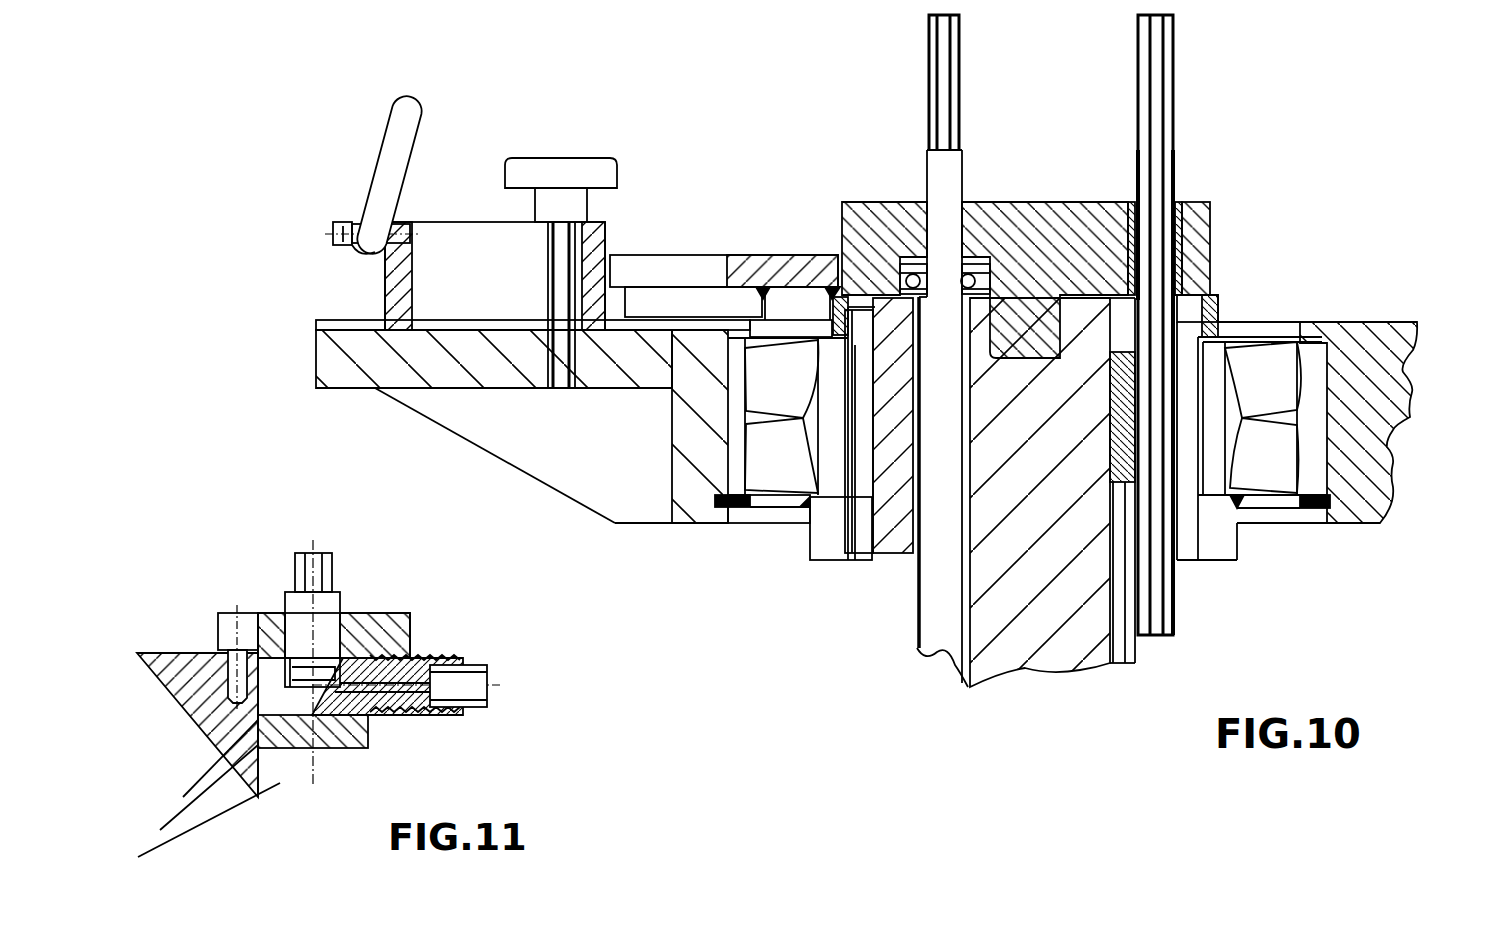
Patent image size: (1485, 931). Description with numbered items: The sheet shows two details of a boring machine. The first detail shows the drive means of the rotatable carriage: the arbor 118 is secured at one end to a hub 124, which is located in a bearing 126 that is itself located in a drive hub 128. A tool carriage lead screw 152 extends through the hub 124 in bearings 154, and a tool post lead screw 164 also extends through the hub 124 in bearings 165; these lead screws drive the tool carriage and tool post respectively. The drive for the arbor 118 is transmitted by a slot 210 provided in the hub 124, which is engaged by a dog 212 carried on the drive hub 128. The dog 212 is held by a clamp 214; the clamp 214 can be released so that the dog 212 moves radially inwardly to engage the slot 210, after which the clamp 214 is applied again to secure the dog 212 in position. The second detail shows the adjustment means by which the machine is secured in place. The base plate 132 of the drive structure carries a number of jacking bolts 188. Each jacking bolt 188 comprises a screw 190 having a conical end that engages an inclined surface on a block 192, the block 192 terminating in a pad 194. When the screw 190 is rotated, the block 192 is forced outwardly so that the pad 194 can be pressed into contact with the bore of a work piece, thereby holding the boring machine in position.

In FIG. 10, the arbor 118 is at (1055, 605).
In FIG. 10, the hub 124 is at (1048, 213).
In FIG. 10, the bearing 126 is at (775, 480).
In FIG. 10, the drive hub 128 is at (1378, 447).
In FIG. 10, the tool carriage lead screw 152 is at (925, 623).
In FIG. 10, the bearings 154 is at (912, 267).
In FIG. 10, the tool post lead screw 164 is at (1123, 483).
In FIG. 10, the bearings 165 is at (1185, 202).
In FIG. 10, the slot 210 is at (698, 262).
In FIG. 10, the dog 212 is at (607, 250).
In FIG. 10, the clamp 214 is at (563, 175).
In FIG. 11, the base plate 132 is at (162, 683).
In FIG. 11, the jacking bolt 188 is at (361, 606).
In FIG. 11, the screw 190 is at (300, 630).
In FIG. 11, the block 192 is at (377, 693).
In FIG. 11, the pad 194 is at (478, 692).